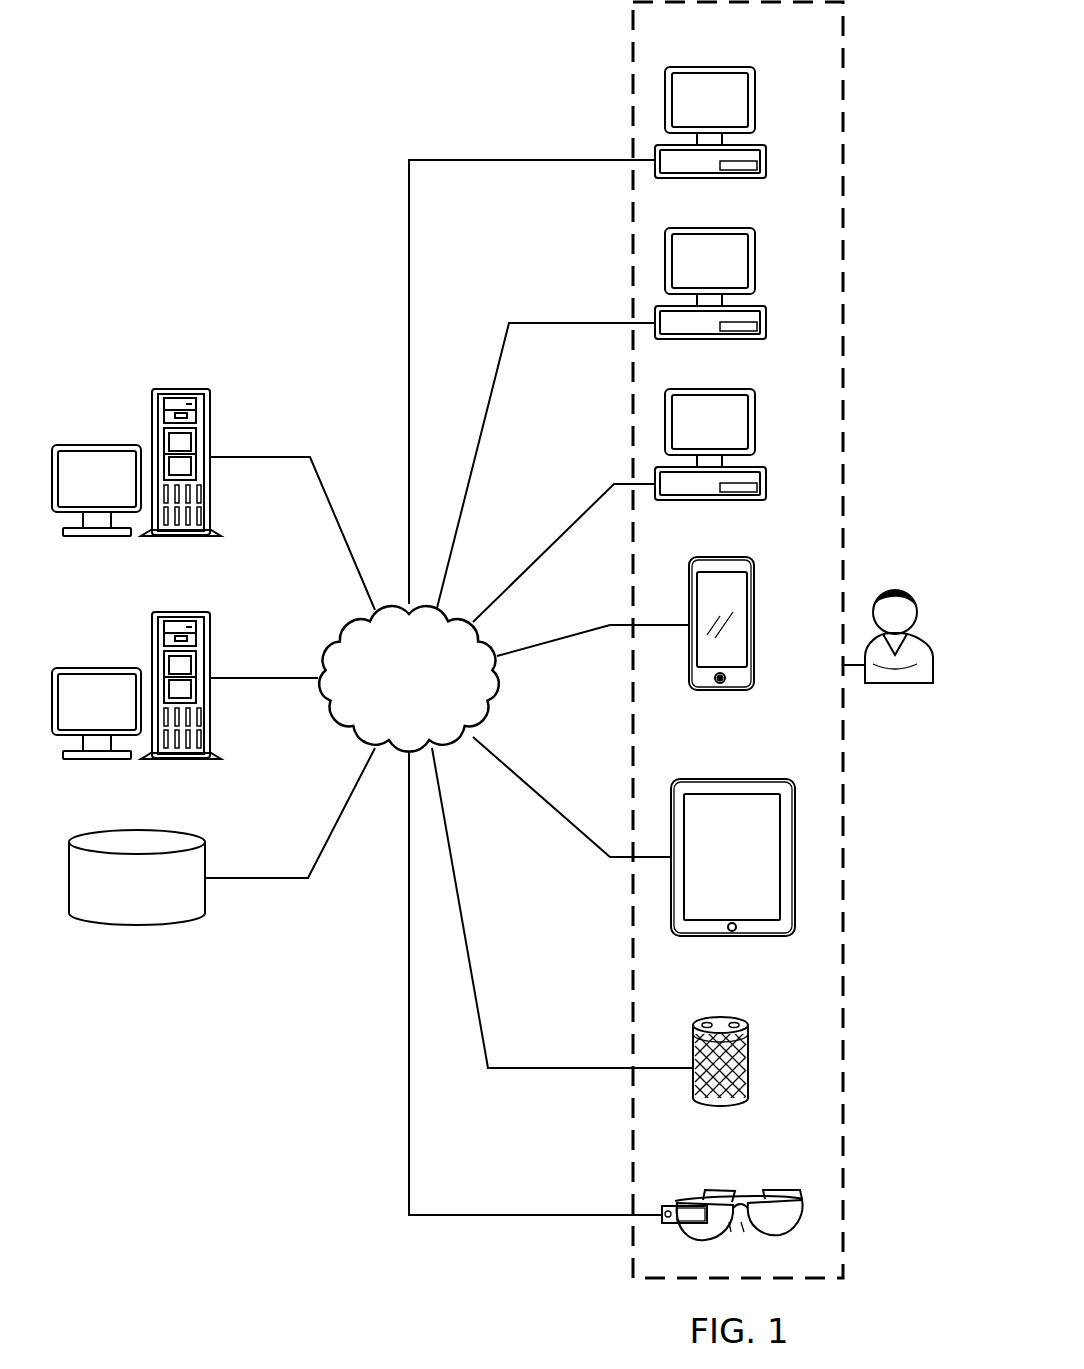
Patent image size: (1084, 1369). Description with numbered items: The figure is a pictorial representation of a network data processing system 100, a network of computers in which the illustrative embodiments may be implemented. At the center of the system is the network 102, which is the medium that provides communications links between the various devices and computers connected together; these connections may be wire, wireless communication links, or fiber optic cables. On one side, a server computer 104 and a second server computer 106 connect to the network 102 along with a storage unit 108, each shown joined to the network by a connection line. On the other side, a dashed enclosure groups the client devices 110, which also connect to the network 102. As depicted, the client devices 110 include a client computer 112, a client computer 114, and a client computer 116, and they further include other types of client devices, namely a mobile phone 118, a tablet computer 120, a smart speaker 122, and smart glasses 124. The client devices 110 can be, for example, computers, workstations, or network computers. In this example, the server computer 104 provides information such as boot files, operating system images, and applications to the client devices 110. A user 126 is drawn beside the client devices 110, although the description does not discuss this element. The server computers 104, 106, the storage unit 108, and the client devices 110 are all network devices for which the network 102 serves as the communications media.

The network data processing system 100 is at (244, 118).
The network 102 is at (388, 710).
The server computer 104 is at (76, 444).
The server computer 106 is at (98, 667).
The storage unit 108 is at (135, 926).
The client devices 110 is at (851, 50).
The client computer 112 is at (756, 100).
The client computer 114 is at (756, 261).
The client computer 116 is at (756, 422).
The mobile phone 118 is at (756, 641).
The tablet computer 120 is at (710, 873).
The smart speaker 122 is at (750, 1055).
The smart glasses 124 is at (782, 1190).
The user 126 is at (913, 592).